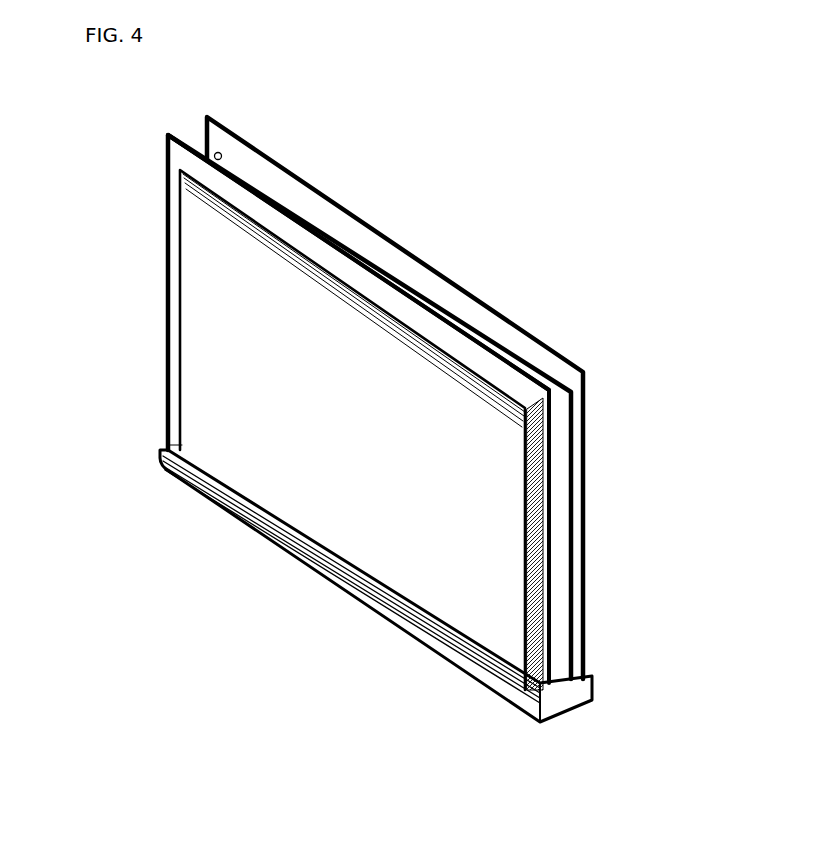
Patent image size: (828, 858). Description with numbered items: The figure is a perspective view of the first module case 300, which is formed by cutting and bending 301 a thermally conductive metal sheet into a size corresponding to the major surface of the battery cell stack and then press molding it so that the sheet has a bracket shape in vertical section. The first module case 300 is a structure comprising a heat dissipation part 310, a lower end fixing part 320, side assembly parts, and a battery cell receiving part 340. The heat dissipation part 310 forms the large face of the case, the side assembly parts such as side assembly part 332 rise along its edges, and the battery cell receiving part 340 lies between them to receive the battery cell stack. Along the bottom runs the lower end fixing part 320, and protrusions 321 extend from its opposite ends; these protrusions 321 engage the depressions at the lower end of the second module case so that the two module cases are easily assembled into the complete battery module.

The first module case 300 is at (138, 153).
The cutting and bending 301 is at (598, 700).
The heat dissipation part 310 is at (202, 305).
The lower end fixing part 320 is at (330, 592).
The protrusions 321 is at (164, 440).
The side assembly part 332 is at (167, 235).
The battery cell receiving part 340 is at (572, 579).